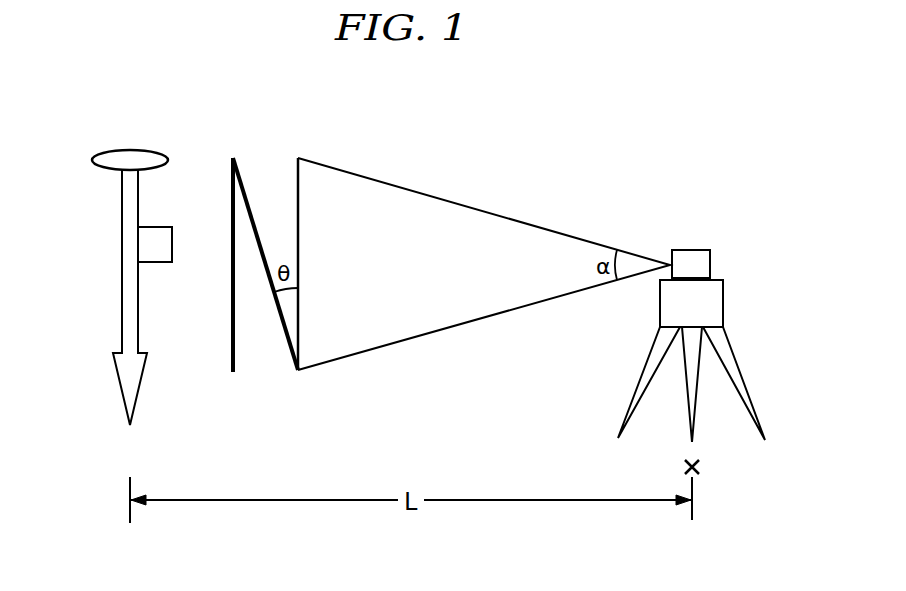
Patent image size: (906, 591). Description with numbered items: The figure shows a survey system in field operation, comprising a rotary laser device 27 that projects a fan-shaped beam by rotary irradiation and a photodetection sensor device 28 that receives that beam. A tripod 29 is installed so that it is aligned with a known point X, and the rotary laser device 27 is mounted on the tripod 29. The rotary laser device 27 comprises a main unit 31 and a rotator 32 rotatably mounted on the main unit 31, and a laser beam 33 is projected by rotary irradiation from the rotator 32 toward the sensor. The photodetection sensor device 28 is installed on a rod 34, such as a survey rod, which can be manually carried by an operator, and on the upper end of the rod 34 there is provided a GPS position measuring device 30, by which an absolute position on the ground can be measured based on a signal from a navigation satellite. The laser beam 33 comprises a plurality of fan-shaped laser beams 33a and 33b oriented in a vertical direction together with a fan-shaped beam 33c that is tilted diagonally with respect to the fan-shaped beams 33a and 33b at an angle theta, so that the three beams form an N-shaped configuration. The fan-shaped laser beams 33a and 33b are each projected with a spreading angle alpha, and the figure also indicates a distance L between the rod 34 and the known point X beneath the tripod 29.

The rotary laser device 27 is at (647, 355).
The photodetection sensor device 28 is at (157, 226).
The tripod 29 is at (745, 380).
The GPS position measuring device 30 is at (130, 149).
The main unit 31 is at (725, 305).
The rotator 32 is at (695, 248).
The laser beam 33 is at (445, 200).
The fan-shaped laser beam 33a is at (300, 258).
The fan-shaped laser beam 33b is at (231, 313).
The fan-shaped beam 33c is at (248, 192).
The rod 34 is at (122, 312).